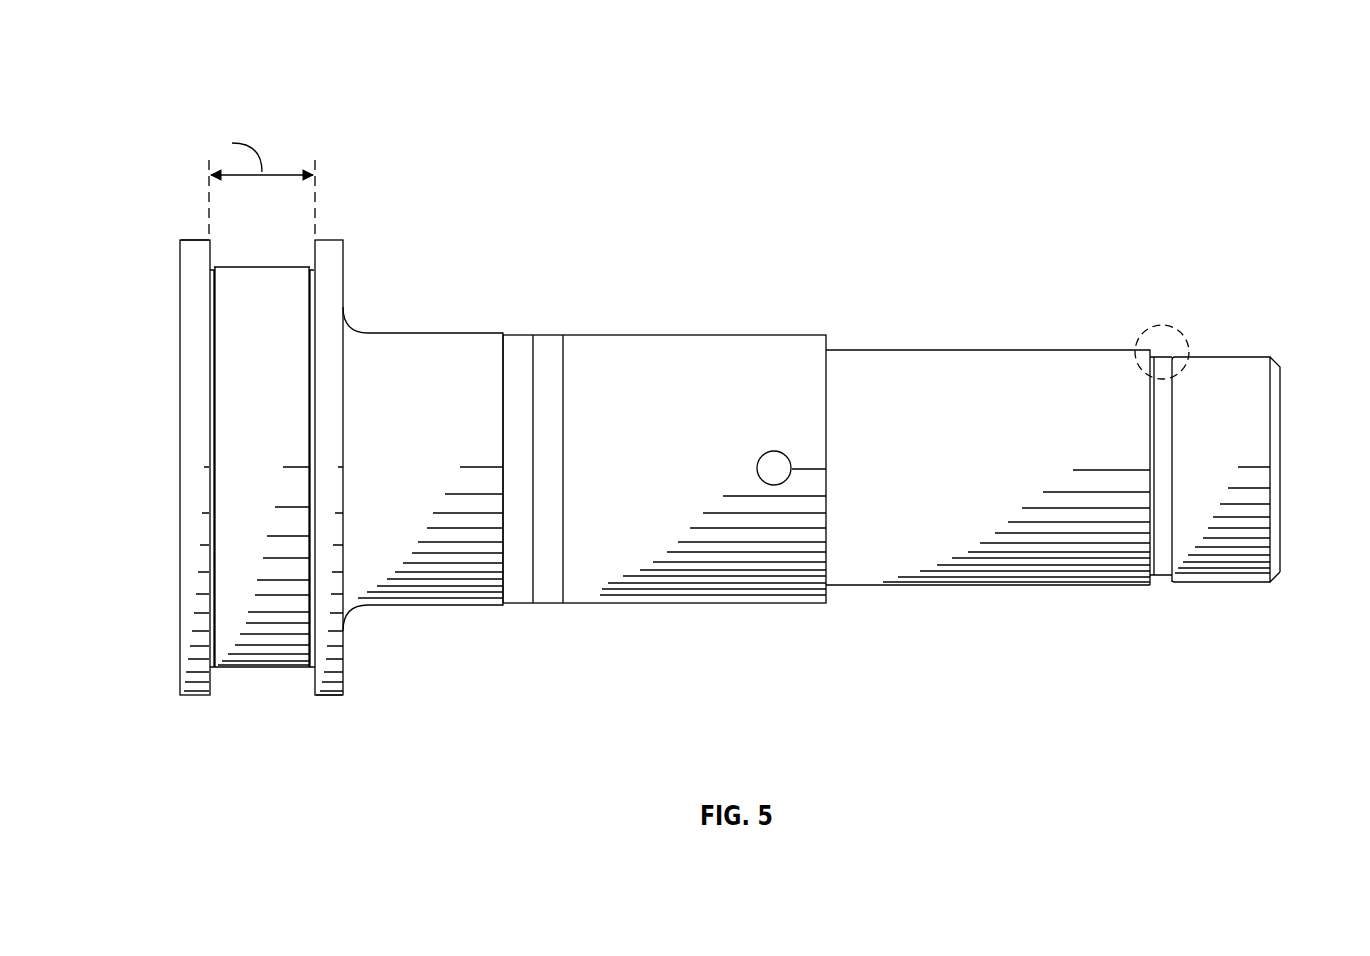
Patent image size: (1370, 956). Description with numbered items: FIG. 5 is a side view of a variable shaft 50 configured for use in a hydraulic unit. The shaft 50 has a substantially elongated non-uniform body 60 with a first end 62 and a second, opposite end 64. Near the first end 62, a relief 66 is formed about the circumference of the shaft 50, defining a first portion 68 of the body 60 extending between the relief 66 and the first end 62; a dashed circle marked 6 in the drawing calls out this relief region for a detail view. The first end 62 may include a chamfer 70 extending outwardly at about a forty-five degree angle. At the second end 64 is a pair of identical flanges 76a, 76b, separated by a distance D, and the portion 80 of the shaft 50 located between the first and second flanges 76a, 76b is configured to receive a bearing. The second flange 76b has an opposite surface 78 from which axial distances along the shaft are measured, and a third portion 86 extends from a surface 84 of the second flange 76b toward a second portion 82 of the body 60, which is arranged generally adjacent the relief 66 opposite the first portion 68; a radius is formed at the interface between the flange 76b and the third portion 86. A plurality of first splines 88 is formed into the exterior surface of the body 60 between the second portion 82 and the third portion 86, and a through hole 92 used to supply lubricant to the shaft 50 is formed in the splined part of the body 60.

The variable shaft 50 is at (1245, 116).
The body 60 is at (1112, 586).
The first end 62 is at (1282, 433).
The second end 64 is at (180, 502).
The relief 66 is at (1163, 578).
The first portion 68 is at (1213, 353).
The chamfer 70 is at (1283, 572).
The first flange 76a is at (195, 229).
The second flange 76b is at (332, 703).
The opposite surface of the second flange 78 is at (313, 688).
The portion of the shaft between the flanges 80 is at (265, 670).
The second portion 82 is at (998, 349).
The surface of the second flange 84 is at (343, 657).
The third portion 86 is at (457, 333).
The first splines 88 is at (670, 368).
The through hole 92 is at (780, 472).
The detail view circle (FIG. 6) 6 is at (1177, 320).